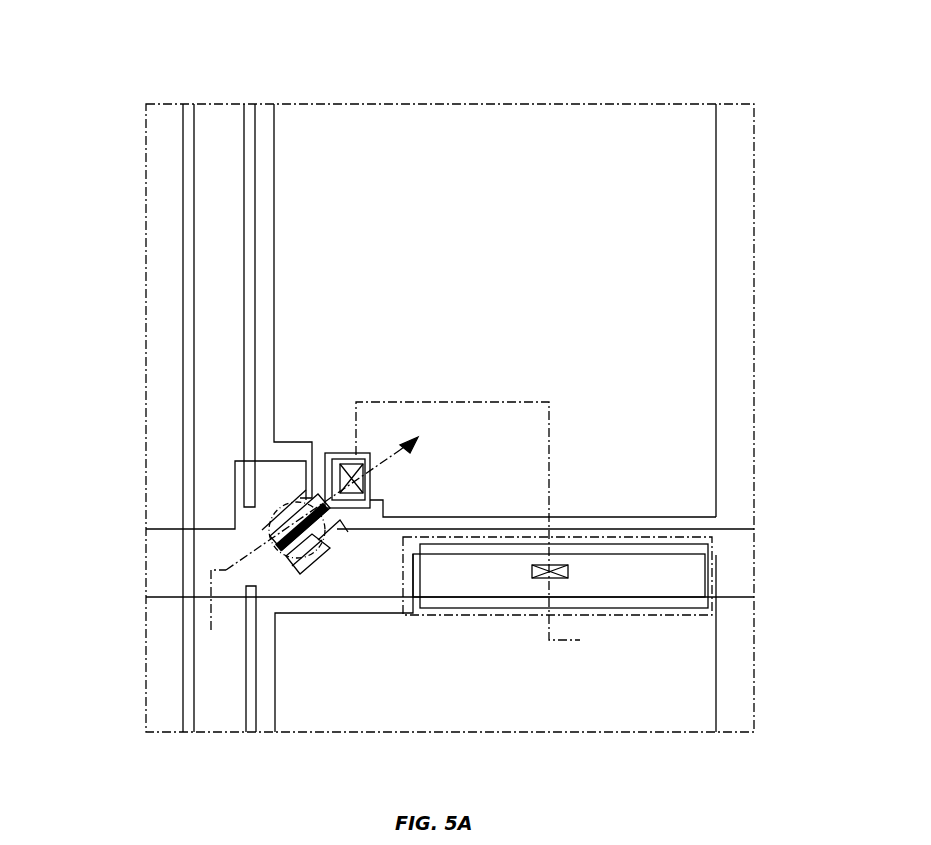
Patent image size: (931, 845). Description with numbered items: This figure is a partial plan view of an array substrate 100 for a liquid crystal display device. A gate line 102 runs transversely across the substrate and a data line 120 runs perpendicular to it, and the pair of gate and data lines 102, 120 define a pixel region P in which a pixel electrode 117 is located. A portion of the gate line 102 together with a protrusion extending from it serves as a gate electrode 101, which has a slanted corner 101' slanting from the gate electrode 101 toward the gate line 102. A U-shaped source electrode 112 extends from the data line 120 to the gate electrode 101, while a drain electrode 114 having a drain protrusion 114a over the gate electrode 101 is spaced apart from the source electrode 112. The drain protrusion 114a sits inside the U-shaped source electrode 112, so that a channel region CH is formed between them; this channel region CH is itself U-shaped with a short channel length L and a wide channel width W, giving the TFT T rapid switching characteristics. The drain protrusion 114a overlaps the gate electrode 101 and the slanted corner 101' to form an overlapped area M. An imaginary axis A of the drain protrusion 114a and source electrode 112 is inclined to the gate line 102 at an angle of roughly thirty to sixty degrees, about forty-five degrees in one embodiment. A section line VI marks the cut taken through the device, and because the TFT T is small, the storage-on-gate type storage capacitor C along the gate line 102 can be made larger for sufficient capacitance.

The array substrate 100 is at (415, 103).
The data line 120 is at (183, 372).
The pixel electrode 117 is at (716, 345).
The pixel region P is at (752, 421).
The gate line 102 is at (737, 556).
The gate electrode 101 is at (285, 418).
The slanted corner 101' is at (523, 509).
The drain electrode 114 is at (370, 470).
The section line VI- VI is at (407, 531).
The imaginary axis A is at (417, 432).
The TFT T is at (268, 550).
The channel region CH is at (283, 548).
The overlapped area M is at (270, 522).
The channel width W is at (270, 527).
The channel length L is at (310, 550).
The source electrode 112 is at (307, 558).
The drain protrusion 114a is at (305, 560).
The storage capacitor C is at (513, 617).